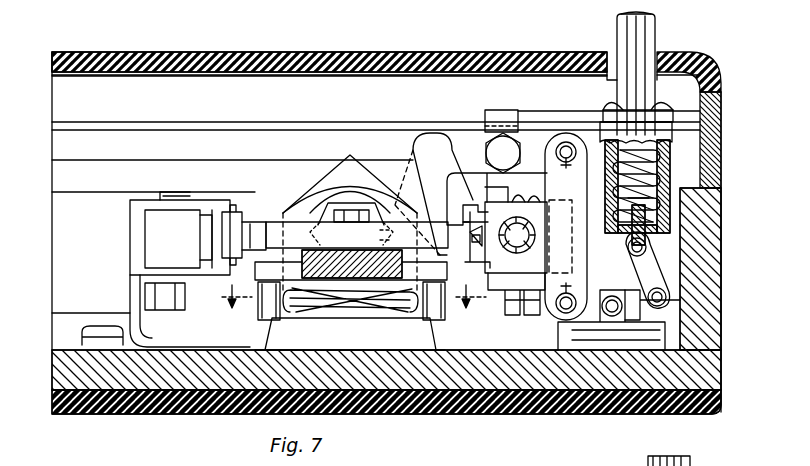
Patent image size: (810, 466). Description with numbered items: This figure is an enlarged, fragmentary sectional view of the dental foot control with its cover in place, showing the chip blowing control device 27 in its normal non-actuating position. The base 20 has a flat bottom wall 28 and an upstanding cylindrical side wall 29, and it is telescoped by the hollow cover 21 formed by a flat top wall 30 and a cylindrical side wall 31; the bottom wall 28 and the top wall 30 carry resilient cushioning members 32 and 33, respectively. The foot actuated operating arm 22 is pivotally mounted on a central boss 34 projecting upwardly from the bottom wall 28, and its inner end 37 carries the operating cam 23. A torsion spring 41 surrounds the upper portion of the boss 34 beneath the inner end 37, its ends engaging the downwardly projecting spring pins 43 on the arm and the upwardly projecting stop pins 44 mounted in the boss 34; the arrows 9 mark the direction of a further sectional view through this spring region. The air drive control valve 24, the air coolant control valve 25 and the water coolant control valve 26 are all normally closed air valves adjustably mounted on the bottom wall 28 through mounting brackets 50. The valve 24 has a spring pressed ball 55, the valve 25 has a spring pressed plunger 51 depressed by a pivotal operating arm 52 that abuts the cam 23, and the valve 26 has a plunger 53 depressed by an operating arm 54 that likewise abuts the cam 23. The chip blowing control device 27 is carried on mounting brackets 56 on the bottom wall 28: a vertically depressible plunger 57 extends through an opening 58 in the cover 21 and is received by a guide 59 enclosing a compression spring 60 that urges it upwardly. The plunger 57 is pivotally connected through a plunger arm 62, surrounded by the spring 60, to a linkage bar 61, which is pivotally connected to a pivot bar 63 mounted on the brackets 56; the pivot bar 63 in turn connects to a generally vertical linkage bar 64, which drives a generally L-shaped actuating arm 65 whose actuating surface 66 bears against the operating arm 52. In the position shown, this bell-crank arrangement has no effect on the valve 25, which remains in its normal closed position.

The section line 9- 9 is at (354, 310).
The base 20 is at (723, 282).
The cover 21 is at (285, 50).
The foot actuated operating arm 22 is at (355, 265).
The operating cam 23 is at (320, 234).
The air drive control valve 24 is at (300, 192).
The air coolant control valve 25 is at (473, 200).
The water coolant control valve 26 is at (138, 203).
The chip blowing control device 27 is at (505, 110).
The bottom wall 28 is at (75, 370).
The side wall 29 is at (702, 343).
The top wall 30 is at (95, 76).
The side wall 31 is at (721, 112).
The cushioning member 32 is at (85, 412).
The cushioning member 33 is at (330, 52).
The central boss 34 is at (390, 352).
The inner end 37 is at (312, 262).
The torsion spring 41 is at (320, 300).
The spring pins 43 is at (272, 322).
The stop pins 44 is at (292, 318).
The mounting brackets 50 is at (335, 205).
The plunger 51 is at (490, 240).
The pivotal operating arm 52 is at (478, 236).
The plunger 53 is at (222, 240).
The operating arm 54 is at (205, 224).
The spring pressed ball 55 is at (357, 236).
The mounting brackets 56 is at (566, 132).
The plunger 57 is at (655, 26).
The opening 58 is at (625, 62).
The guide 59 is at (660, 176).
The compression spring 60 is at (660, 188).
The linkage bar 61 is at (657, 275).
The plunger arm 62 is at (626, 228).
The pivot bar 63 is at (660, 345).
The linkage bar 64 is at (582, 222).
The actuating arm 65 is at (428, 148).
The actuating surface 66 is at (456, 181).